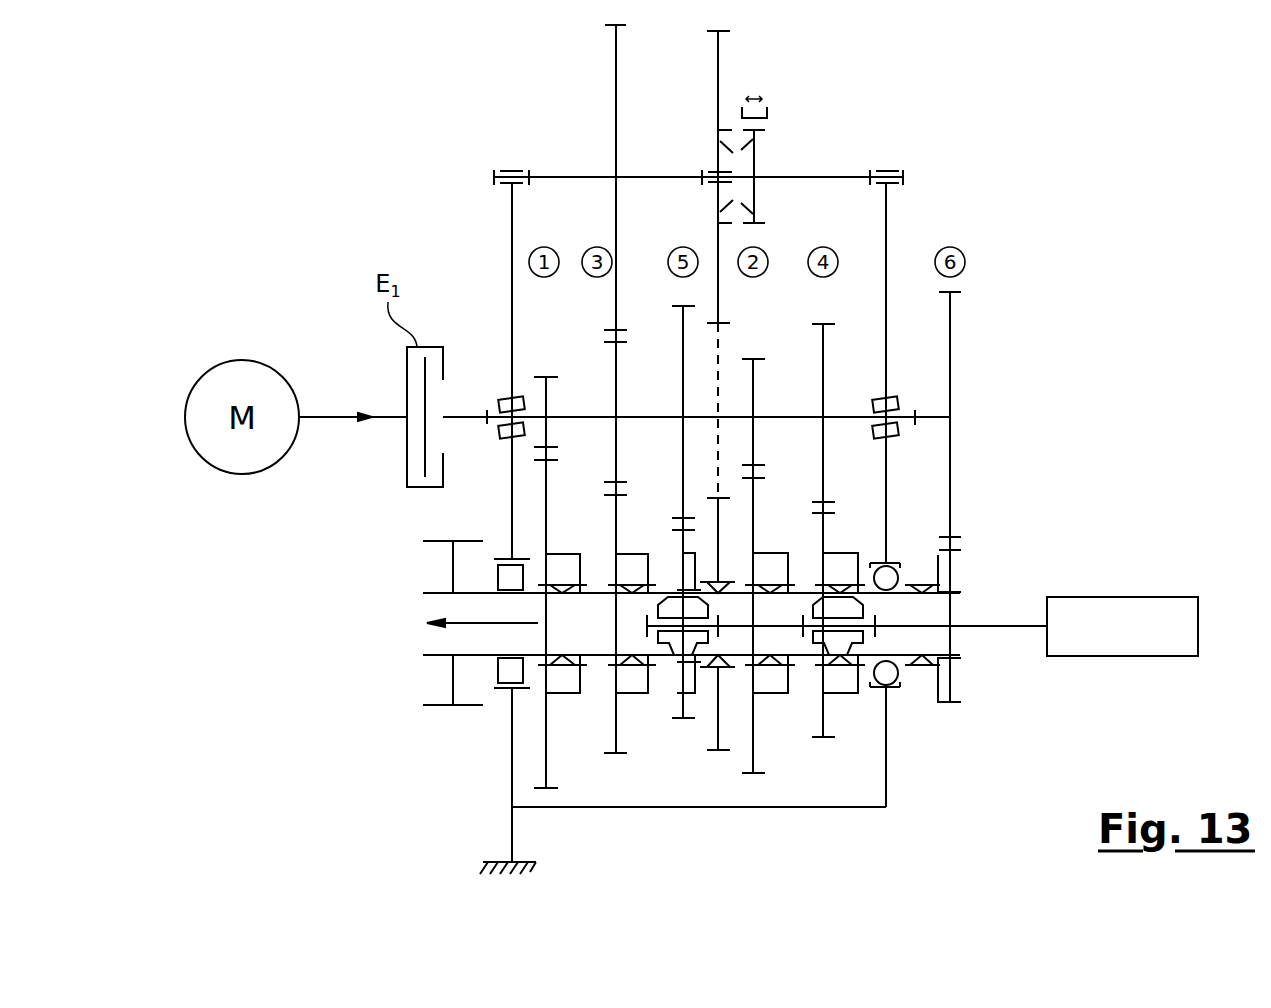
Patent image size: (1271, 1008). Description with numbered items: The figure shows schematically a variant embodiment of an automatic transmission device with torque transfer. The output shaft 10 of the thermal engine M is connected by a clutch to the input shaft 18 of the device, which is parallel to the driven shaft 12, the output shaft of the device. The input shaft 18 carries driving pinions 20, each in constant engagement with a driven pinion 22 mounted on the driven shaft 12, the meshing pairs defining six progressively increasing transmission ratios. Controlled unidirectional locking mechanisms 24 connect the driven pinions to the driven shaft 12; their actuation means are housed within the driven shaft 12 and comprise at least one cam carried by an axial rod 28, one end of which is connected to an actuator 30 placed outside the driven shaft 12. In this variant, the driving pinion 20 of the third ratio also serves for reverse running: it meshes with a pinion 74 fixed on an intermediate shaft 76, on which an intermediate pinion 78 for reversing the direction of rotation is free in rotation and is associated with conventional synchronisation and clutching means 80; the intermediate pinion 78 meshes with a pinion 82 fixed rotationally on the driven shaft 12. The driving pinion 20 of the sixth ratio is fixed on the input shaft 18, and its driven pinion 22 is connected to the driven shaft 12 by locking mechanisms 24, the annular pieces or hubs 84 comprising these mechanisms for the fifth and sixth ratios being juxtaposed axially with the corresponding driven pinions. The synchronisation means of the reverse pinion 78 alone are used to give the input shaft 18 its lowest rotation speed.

The output shaft of the thermal engine 10 is at (337, 416).
The driven shaft 12 is at (435, 594).
The input shaft 18 is at (463, 417).
The driving pinion 20 is at (950, 352).
The driven pinion 22 is at (953, 575).
The controlled unidirectional locking mechanism 24 is at (922, 583).
The axial rod 28 is at (1010, 628).
The actuator 30 is at (1122, 626).
The pinion 74 is at (615, 92).
The intermediate shaft 76 is at (567, 176).
The intermediate pinion 78 is at (718, 57).
The synchronisation and clutching means 80 is at (755, 166).
The pinion 82 is at (717, 517).
The annular piece or hub 84 is at (702, 665).